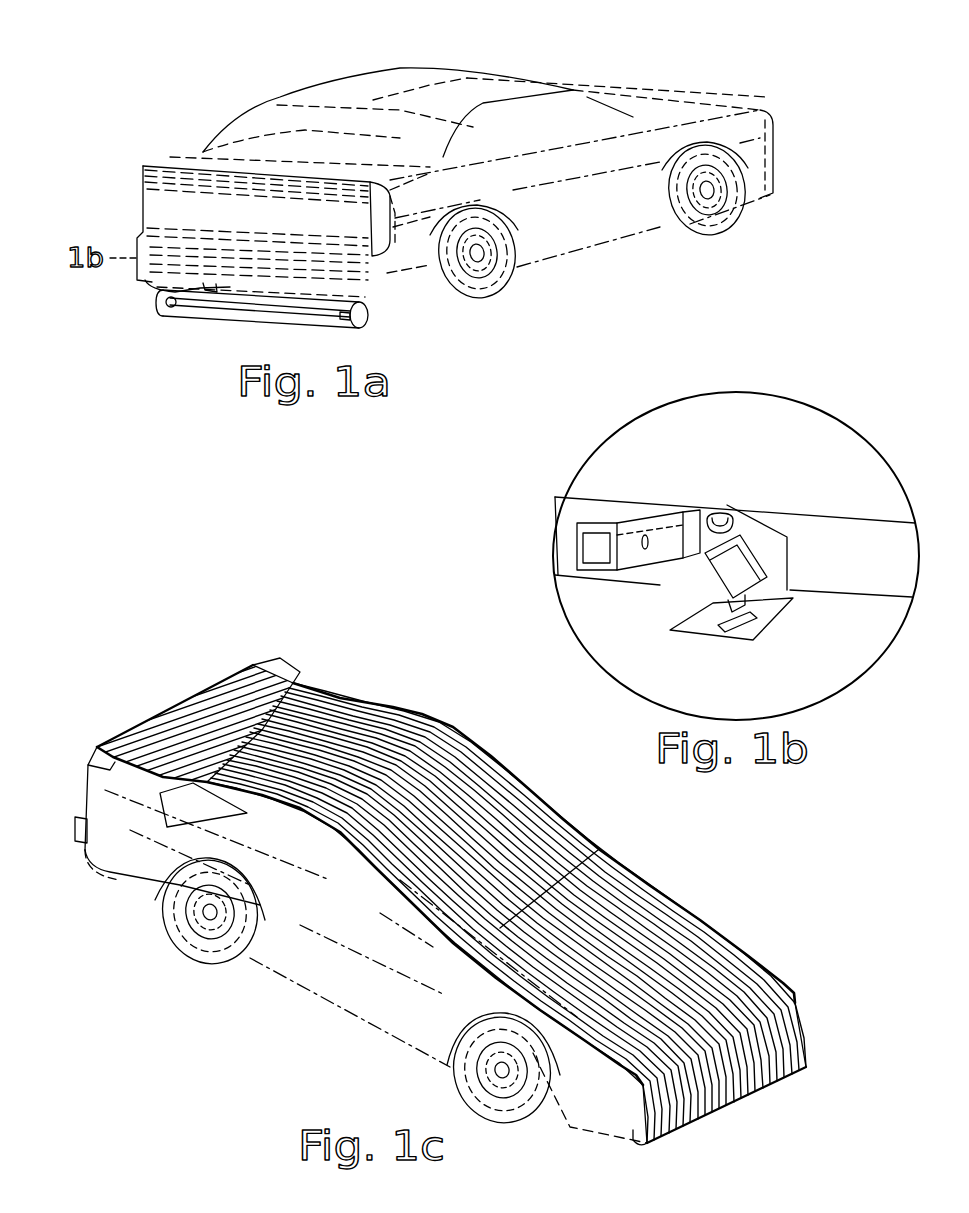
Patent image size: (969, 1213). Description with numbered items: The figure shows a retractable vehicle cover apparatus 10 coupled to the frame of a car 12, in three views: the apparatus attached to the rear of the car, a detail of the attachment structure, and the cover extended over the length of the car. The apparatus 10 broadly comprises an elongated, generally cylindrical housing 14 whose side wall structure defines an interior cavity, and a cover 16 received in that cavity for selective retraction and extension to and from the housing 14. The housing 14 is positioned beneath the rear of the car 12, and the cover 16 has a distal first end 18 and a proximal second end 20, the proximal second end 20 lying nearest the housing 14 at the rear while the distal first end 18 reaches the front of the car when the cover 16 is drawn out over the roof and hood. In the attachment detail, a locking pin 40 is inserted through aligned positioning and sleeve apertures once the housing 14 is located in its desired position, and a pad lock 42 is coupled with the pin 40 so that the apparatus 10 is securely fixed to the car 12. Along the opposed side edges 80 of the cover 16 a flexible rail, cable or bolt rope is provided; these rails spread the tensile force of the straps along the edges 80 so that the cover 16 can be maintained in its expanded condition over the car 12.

In FIG. 1A, the retractable vehicle cover apparatus 10 is at (257, 353).
In FIG. 1A, the car 12 is at (480, 90).
In FIG. 1C, the car 12 is at (337, 970).
In FIG. 1A, the housing 14 is at (350, 327).
In FIG. 1C, the housing 14 is at (110, 873).
In FIG. 1C, the cover 16 is at (443, 767).
In FIG. 1C, the distal first end 18 is at (737, 1023).
In FIG. 1C, the proximal second end 20 is at (187, 717).
In FIG. 1B, the locking pin 40 is at (720, 520).
In FIG. 1B, the pad lock 42 is at (737, 573).
In FIG. 1C, the side edges 80 is at (733, 947).